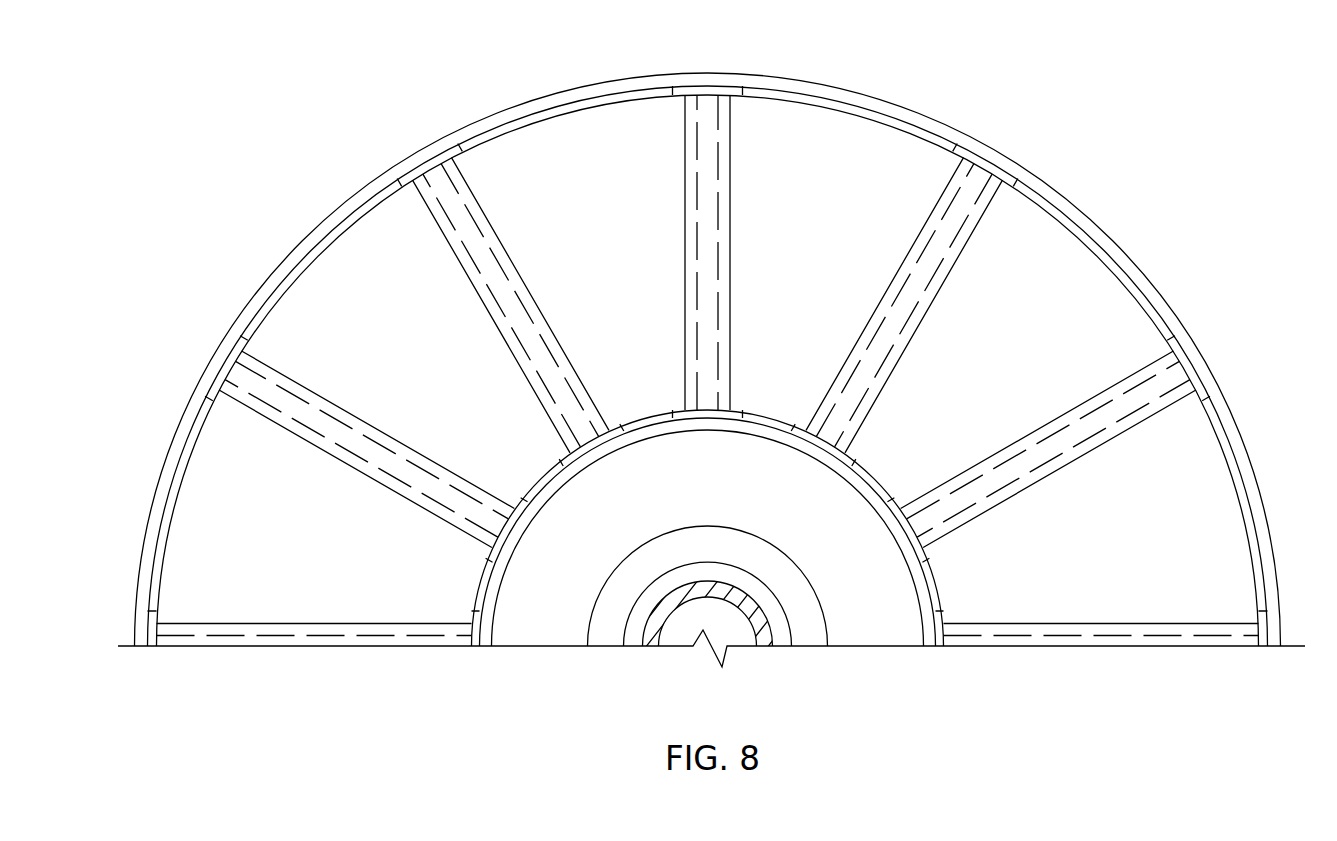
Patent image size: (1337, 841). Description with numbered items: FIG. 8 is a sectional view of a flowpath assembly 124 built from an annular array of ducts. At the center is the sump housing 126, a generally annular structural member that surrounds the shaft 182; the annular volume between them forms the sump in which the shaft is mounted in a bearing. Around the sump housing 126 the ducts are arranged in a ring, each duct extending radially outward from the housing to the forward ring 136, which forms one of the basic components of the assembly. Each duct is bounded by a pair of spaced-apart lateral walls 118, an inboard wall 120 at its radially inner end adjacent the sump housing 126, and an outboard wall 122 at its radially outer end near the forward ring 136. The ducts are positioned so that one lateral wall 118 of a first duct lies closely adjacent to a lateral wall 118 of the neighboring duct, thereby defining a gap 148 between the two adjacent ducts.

The lateral walls 118 is at (695, 236).
The inboard wall 120 is at (767, 422).
The outboard wall 122 is at (838, 106).
The flowpath assembly 124 is at (1026, 104).
The sump housing 126 is at (780, 438).
The forward ring 136 is at (882, 103).
The gap 148 is at (708, 96).
The shaft 182 is at (763, 643).